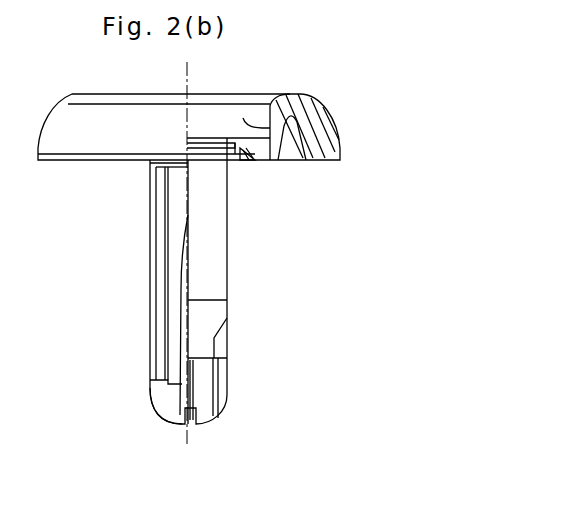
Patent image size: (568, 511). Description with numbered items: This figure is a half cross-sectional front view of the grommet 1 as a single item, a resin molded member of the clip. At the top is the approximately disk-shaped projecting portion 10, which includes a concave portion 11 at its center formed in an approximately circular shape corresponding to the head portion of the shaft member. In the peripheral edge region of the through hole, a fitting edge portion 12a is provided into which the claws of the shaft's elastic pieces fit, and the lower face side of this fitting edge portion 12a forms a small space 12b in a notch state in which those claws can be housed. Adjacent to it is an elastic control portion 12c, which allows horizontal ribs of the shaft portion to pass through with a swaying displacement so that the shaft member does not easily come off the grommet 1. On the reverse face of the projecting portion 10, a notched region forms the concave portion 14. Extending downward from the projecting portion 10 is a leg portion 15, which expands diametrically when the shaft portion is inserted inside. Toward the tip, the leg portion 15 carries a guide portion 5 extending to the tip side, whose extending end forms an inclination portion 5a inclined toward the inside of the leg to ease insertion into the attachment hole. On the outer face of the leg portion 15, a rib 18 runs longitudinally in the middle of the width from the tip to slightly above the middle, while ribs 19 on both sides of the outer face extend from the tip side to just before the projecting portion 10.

The grommet 1 is at (284, 194).
The guide portion 5 is at (208, 418).
The inclination portion 5a is at (163, 414).
The projecting portion 10 is at (243, 168).
The concave portion 11 is at (243, 118).
The fitting edge portion 12a is at (243, 142).
The small space 12b is at (250, 165).
The elastic control portion 12c is at (223, 140).
The concave portion 14 is at (308, 147).
The leg portion 15 is at (233, 232).
The rib 18 is at (182, 315).
The ribs 19 is at (163, 224).